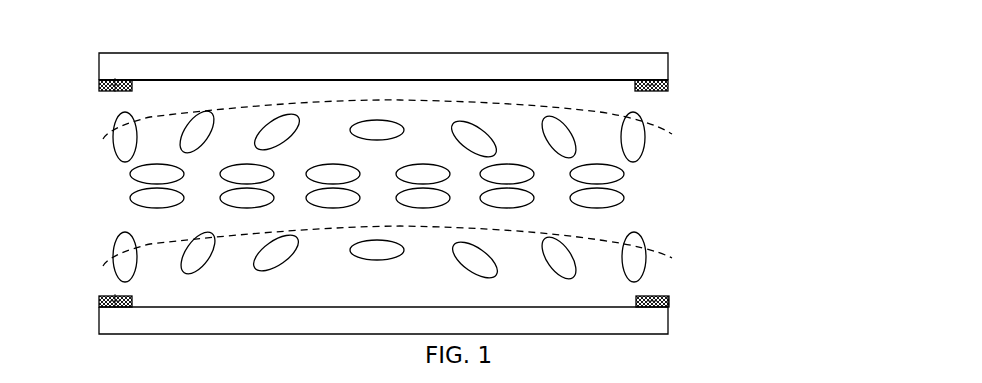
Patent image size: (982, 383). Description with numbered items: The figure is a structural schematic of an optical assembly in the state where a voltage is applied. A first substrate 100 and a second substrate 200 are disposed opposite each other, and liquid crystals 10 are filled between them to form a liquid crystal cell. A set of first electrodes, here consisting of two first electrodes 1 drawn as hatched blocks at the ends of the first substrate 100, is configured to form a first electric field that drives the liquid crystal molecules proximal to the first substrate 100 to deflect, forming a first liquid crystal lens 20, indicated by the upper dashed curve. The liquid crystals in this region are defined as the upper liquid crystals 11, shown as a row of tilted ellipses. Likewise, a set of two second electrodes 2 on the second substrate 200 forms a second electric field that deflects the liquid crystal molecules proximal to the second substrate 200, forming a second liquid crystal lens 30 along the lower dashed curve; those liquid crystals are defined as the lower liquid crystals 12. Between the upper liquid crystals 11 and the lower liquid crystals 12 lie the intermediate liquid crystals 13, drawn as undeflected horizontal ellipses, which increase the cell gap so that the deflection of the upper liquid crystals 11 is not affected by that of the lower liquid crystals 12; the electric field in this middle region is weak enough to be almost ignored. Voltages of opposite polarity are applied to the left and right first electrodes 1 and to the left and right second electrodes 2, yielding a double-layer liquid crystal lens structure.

The first substrate 100 is at (638, 67).
The first electrode 1 is at (128, 80).
The first liquid crystal lens 20 is at (155, 117).
The upper liquid crystals 11 is at (683, 142).
The intermediate liquid crystals 13 is at (683, 186).
The lower liquid crystals 12 is at (683, 270).
The liquid crystals 10 is at (847, 138).
The second liquid crystal lens 30 is at (183, 240).
The second electrode 2 is at (99, 302).
The second substrate 200 is at (638, 321).